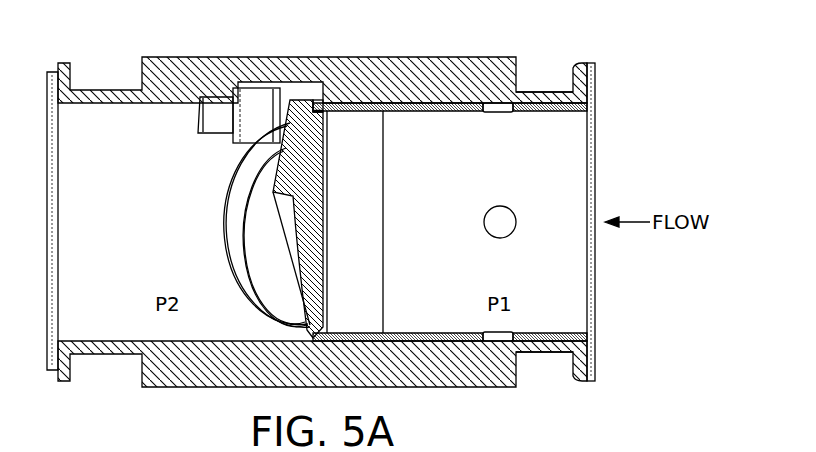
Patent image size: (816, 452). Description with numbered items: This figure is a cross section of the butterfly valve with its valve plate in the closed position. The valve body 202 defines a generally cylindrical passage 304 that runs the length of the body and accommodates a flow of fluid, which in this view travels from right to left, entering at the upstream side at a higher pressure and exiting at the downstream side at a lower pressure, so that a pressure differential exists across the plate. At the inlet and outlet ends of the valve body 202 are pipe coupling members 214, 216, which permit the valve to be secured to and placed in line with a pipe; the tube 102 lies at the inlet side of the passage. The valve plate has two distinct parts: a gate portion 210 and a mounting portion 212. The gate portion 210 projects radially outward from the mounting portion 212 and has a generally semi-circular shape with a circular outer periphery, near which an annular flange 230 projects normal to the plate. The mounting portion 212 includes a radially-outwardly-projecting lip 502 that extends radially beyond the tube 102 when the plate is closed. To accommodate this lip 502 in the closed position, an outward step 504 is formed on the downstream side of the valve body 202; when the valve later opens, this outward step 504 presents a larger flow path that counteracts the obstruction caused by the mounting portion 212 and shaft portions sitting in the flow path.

The tube 102 is at (590, 128).
The valve body 202 is at (494, 57).
The gate portion 210 is at (313, 253).
The mounting portion 212 is at (288, 148).
The pipe coupling member 214 is at (545, 92).
The pipe coupling member 216 is at (112, 355).
The annular flange 230 is at (330, 203).
The passage 304 is at (553, 183).
The radially-outwardly-projecting lip 502 is at (320, 104).
The outward step 504 is at (258, 96).